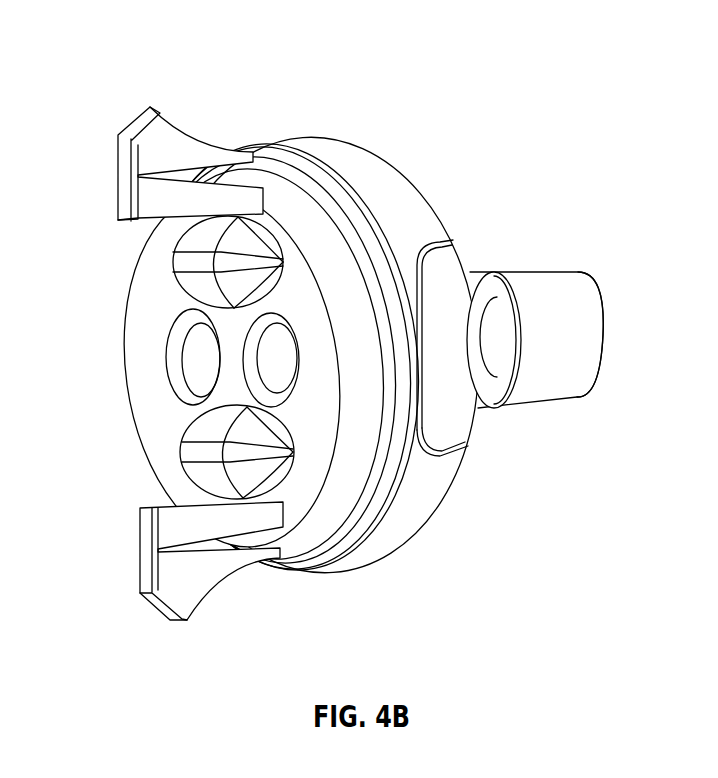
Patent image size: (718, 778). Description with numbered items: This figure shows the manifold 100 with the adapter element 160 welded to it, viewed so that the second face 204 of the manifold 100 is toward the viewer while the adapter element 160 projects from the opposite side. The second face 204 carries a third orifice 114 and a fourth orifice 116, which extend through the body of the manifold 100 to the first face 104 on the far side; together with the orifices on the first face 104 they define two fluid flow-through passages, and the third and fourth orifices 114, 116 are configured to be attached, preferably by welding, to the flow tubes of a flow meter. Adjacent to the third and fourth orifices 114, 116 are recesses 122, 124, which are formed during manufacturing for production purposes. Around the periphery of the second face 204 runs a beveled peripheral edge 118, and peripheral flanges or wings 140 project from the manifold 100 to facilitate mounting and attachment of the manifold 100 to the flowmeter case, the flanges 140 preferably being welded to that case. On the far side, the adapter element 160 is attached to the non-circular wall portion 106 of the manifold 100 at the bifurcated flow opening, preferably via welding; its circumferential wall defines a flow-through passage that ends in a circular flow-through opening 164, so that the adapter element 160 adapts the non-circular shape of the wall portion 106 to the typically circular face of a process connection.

The manifold 100 is at (370, 353).
The first face 104 is at (410, 180).
The wall portion 106 is at (490, 275).
The third orifice 114 is at (247, 363).
The fourth orifice 116 is at (167, 358).
The beveled peripheral edge 118 is at (372, 483).
The recess 122 is at (190, 263).
The recess 124 is at (180, 452).
The peripheral flanges or wings 140 is at (163, 128).
The adapter element 160 is at (578, 306).
The flow-through opening 164 is at (605, 338).
The second face 204 is at (131, 337).